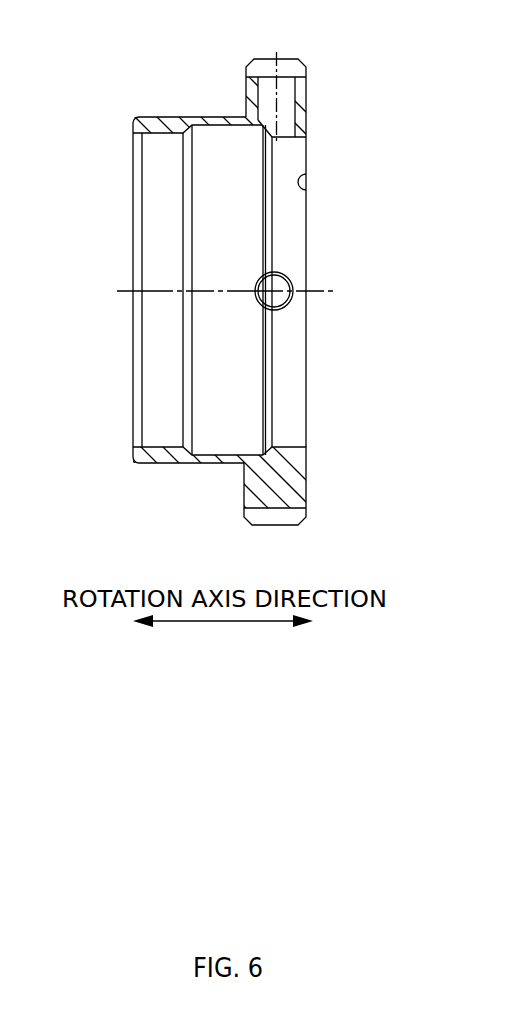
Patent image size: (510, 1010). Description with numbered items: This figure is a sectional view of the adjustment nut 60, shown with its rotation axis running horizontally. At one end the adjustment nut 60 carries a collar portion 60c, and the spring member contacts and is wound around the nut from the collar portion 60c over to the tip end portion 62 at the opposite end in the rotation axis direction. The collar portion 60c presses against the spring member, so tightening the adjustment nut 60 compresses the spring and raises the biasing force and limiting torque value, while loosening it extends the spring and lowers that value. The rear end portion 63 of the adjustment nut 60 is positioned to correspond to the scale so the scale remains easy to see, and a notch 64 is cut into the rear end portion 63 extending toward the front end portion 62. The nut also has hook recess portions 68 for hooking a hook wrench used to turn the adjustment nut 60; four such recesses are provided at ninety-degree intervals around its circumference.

The adjustment nut 60 is at (165, 86).
The tip end portion 62 is at (129, 163).
The rear end portion 63 is at (314, 109).
The notch 64 is at (314, 180).
The hook recess portion 68 is at (303, 276).
The collar portion 60c is at (253, 484).